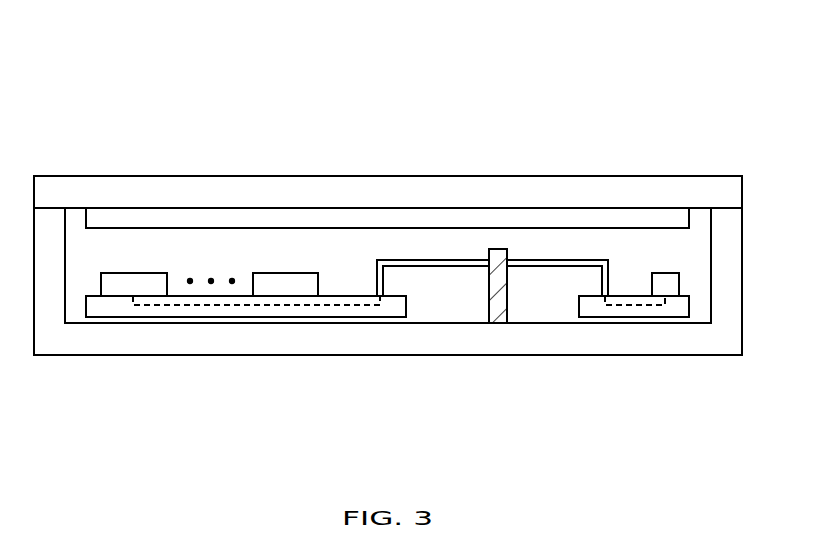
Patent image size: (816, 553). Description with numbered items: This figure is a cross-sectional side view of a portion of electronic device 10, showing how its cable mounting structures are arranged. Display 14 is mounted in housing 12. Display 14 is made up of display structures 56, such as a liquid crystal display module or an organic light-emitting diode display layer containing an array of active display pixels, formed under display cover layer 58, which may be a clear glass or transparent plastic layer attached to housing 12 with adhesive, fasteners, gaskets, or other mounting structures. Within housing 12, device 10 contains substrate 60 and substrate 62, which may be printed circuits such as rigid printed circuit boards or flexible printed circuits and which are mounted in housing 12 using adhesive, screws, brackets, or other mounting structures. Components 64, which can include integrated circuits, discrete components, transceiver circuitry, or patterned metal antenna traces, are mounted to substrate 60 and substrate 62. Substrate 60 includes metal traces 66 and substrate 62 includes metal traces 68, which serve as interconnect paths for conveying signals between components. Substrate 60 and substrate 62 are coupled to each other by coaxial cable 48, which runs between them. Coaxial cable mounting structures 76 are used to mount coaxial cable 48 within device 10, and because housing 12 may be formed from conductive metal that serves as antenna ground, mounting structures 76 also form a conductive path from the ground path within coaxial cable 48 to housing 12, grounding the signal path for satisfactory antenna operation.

The electronic device 10 is at (689, 50).
The housing 12 is at (737, 281).
The display 14 is at (585, 156).
The coaxial cable 48 is at (441, 261).
The display structures 56 is at (345, 215).
The display cover layer 58 is at (230, 185).
The substrate 60 is at (107, 312).
The substrate 62 is at (597, 312).
The components 64 is at (135, 281).
The metal traces 66 is at (235, 307).
The metal traces 68 is at (655, 307).
The coaxial cable mounting structures 76 is at (498, 318).